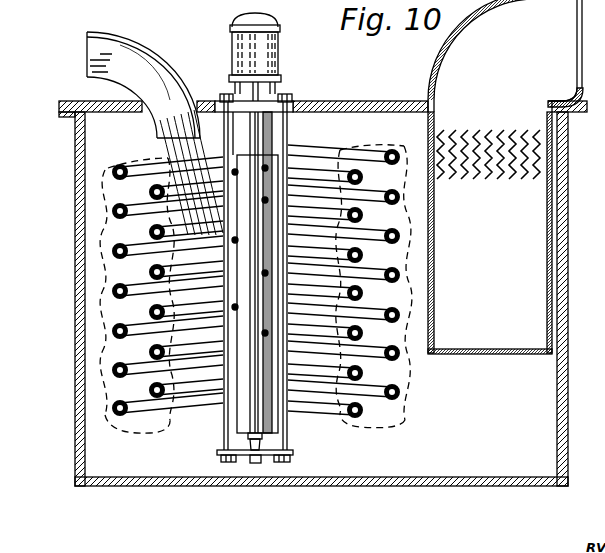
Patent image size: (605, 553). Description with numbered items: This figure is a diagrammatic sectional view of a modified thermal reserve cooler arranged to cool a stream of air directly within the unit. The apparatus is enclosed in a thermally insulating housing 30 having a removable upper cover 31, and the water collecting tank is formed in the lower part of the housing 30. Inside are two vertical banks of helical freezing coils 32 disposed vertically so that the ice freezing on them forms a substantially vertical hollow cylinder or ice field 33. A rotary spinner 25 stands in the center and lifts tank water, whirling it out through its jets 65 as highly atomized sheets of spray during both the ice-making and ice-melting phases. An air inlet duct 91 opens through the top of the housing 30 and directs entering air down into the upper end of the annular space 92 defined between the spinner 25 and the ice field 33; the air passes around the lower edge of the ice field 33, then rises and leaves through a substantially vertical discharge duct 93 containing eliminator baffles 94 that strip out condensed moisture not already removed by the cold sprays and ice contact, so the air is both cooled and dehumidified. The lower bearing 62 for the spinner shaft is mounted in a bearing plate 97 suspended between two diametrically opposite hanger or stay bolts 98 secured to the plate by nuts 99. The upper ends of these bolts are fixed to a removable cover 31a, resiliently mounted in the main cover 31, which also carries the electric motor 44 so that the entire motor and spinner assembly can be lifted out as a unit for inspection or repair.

The housing 30 is at (103, 485).
The upper cover 31 is at (368, 101).
The removable cover 31a is at (293, 101).
The electric motor 44 is at (272, 58).
The air inlet duct 91 is at (170, 72).
The annular space 92 is at (170, 162).
The rotary spinner 25 is at (272, 158).
The jets 65 is at (264, 201).
The hanger or stay bolts 98 is at (288, 433).
The bearing plate 97 is at (293, 452).
The nuts 99 is at (285, 462).
The lower bearing 62 is at (257, 463).
The freezing coils 32 is at (120, 420).
The ice field 33 is at (147, 420).
The discharge passageway or duct 93 is at (524, 349).
The eliminator baffles 94 is at (535, 170).